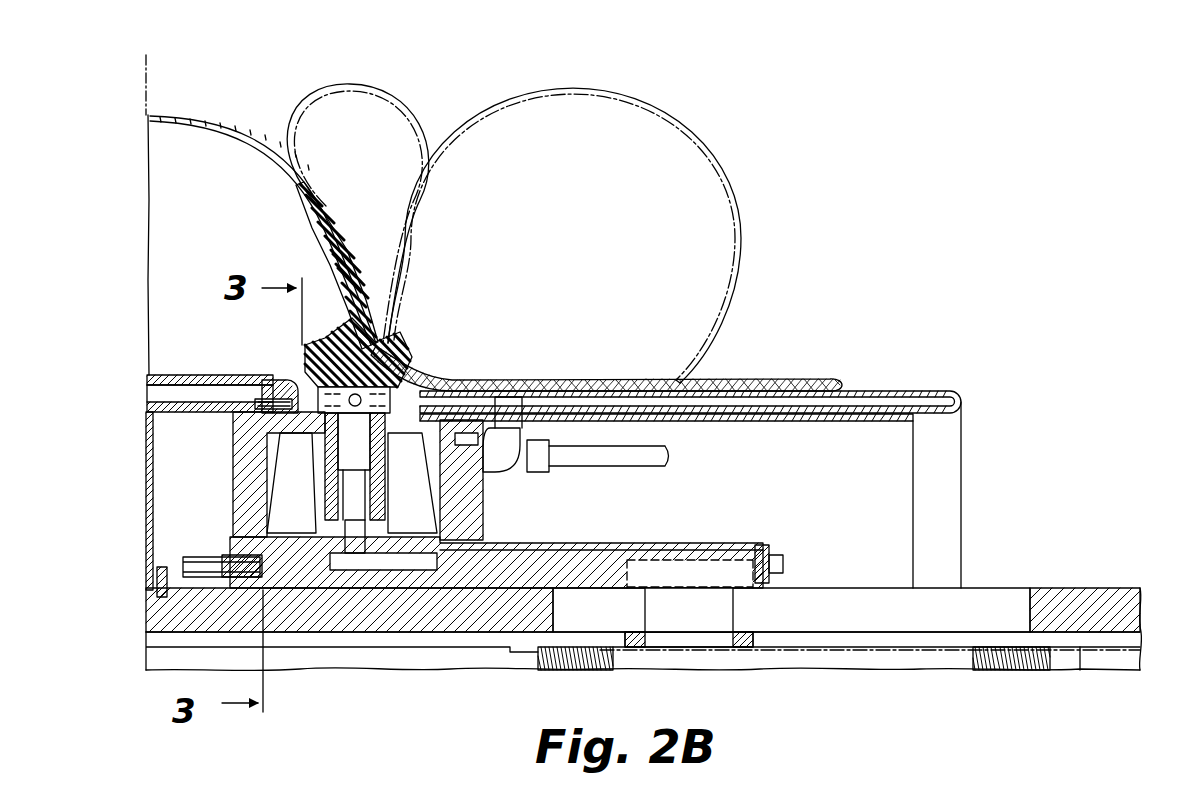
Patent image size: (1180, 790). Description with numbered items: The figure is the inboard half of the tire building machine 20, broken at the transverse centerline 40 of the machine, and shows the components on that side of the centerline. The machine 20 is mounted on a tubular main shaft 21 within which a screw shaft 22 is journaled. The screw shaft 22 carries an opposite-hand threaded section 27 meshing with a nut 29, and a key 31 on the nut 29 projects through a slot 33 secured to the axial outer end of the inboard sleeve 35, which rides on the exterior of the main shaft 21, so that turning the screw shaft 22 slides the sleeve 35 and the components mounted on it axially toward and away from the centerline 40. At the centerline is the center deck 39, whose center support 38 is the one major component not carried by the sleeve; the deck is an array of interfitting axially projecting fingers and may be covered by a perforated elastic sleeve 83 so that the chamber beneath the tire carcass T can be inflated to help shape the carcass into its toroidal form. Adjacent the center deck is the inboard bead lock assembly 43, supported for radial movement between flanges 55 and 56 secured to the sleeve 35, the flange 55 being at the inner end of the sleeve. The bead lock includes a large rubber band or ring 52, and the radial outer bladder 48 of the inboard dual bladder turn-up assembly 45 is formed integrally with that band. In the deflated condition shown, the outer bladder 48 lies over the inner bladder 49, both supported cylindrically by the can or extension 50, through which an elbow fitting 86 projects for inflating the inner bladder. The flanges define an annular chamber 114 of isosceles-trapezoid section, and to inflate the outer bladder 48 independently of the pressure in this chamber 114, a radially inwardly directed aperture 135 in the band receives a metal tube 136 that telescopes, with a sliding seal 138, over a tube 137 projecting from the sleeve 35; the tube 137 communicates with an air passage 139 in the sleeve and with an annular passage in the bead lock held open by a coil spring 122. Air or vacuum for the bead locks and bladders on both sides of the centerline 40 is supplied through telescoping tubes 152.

The tire building machine 20 is at (745, 150).
The main shaft 21 is at (1040, 588).
The screw shaft 22 is at (460, 660).
The threaded section 27 is at (1018, 668).
The nut 29 is at (697, 648).
The key 31 is at (728, 606).
The slot 33 is at (821, 595).
The inboard sleeve 35 is at (568, 562).
The center support 38 is at (153, 510).
The center deck 39 is at (196, 372).
The transverse centerline 40 is at (146, 94).
The inboard bead lock assembly 43 is at (290, 372).
The inboard dual bladder turn-up assembly 45 is at (718, 365).
The outer bladder 48 is at (596, 380).
The inner bladder 49 is at (905, 391).
The cylindrical can 50 is at (798, 421).
The rubber band 52 is at (322, 338).
The flange 55 is at (245, 474).
The flange 56 is at (463, 470).
The elastic sleeve 83 is at (180, 374).
The elbow fitting 86 is at (524, 475).
The annular chamber 114 is at (327, 528).
The coil spring 122 is at (352, 413).
The aperture 135 is at (365, 458).
The metal tube 136 is at (335, 500).
The projecting tube 137 is at (370, 516).
The sliding seal 138 is at (328, 478).
The air passage 139 is at (392, 565).
The telescoping tubes 152 is at (201, 557).
The tire carcass T is at (292, 196).